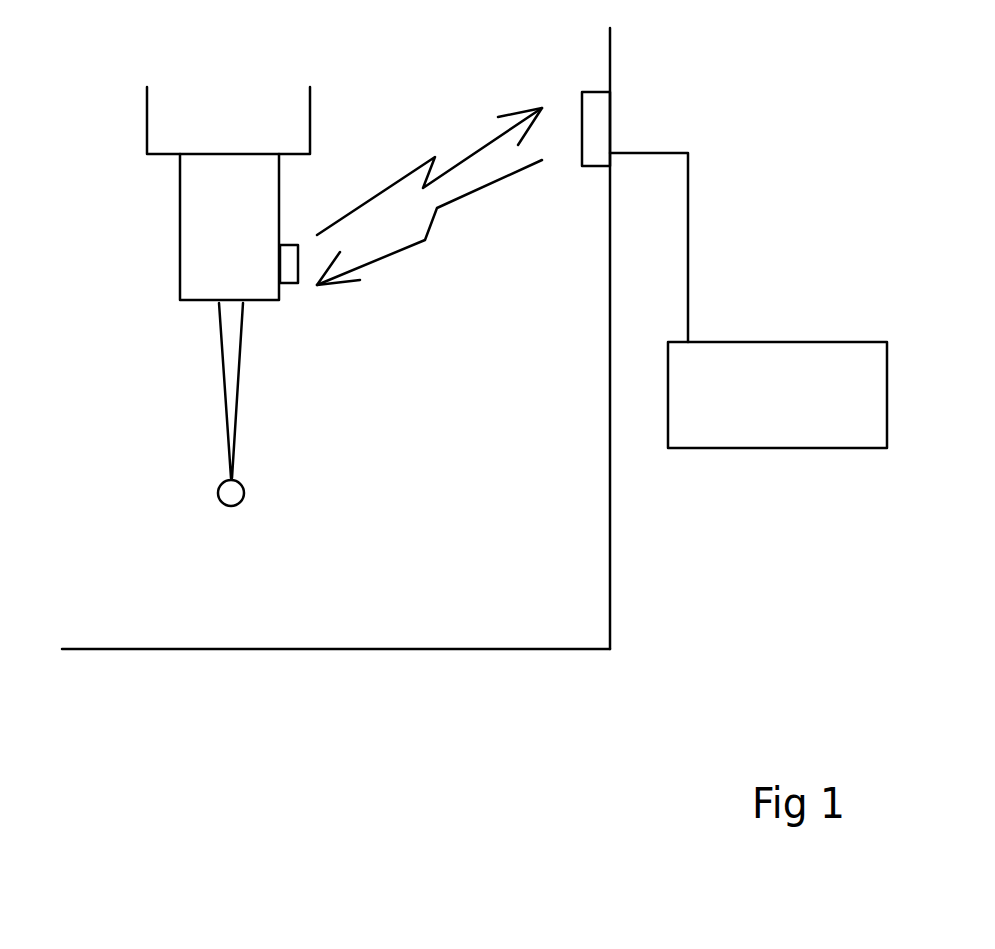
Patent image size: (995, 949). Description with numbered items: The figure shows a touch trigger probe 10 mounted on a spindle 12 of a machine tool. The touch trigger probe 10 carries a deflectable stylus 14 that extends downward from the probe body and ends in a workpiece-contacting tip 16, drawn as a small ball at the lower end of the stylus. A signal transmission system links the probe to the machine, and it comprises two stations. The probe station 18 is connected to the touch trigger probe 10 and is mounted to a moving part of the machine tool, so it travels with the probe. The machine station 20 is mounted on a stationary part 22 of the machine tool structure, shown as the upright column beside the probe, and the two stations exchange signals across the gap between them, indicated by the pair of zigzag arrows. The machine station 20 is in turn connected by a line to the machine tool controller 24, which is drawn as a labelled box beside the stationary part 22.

The touch trigger probe 10 is at (172, 252).
The spindle 12 is at (138, 97).
The deflectable stylus 14 is at (216, 412).
The workpiece-contacting tip 16 is at (251, 499).
The probe station 18 is at (290, 285).
The machine station 20 is at (568, 108).
The stationary part 22 is at (622, 567).
The machine tool controller 24 is at (867, 458).